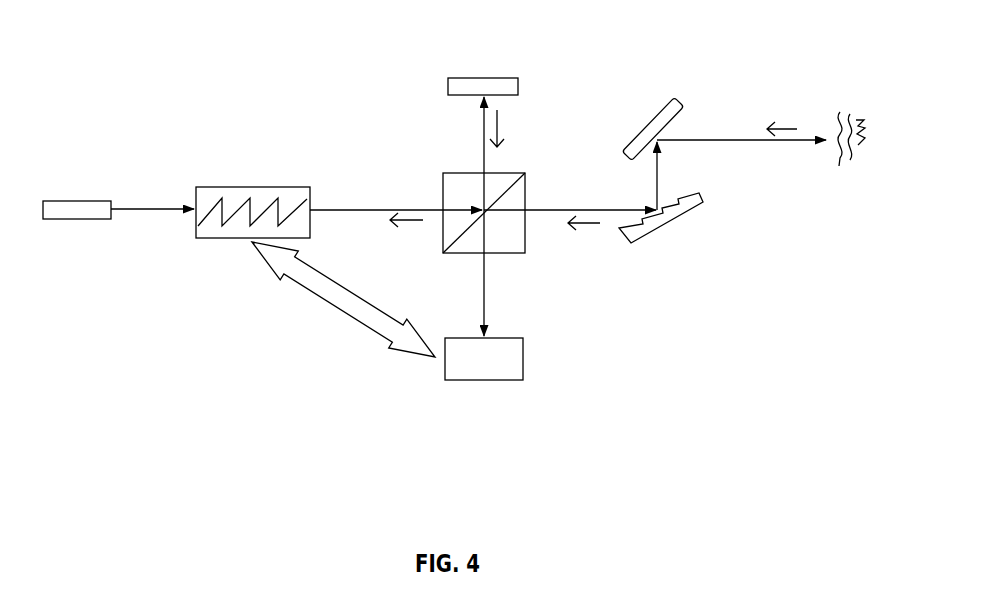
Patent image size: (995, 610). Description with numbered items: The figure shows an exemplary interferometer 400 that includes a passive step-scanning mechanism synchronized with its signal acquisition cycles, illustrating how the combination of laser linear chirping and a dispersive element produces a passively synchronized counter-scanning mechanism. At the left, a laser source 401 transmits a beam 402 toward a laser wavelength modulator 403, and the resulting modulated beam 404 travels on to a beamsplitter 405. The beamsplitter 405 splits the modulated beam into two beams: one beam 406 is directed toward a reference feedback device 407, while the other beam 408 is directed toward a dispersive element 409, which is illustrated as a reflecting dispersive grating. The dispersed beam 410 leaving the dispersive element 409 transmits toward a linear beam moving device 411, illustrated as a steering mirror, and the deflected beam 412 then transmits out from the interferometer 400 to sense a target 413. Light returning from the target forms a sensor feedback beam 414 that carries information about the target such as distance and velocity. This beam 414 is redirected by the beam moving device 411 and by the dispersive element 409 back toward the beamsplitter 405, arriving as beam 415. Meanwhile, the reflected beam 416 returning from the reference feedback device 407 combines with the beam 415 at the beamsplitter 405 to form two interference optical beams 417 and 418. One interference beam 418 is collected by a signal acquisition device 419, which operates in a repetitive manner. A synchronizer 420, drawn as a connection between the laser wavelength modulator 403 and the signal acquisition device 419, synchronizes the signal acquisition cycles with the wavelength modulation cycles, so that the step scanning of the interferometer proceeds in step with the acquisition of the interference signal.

The interferometer 400 is at (151, 373).
The laser source 401 is at (89, 197).
The beam 402 is at (154, 204).
The laser wavelength modulator 403 is at (251, 184).
The modulated beam 404 is at (347, 202).
The beamsplitter 405 is at (436, 177).
The beam 406 is at (472, 148).
The reference feedback device 407 is at (439, 85).
The beam 408 is at (553, 202).
The dispersive element 409 is at (678, 224).
The dispersed beam 410 is at (666, 171).
The linear beam moving device 411 is at (644, 111).
The deflected beam 412 is at (741, 151).
The target 413 is at (852, 106).
The sensor feedback beam 414 is at (782, 117).
The beam 415 is at (582, 238).
The reflected beam 416 is at (504, 131).
The interference optical beam 417 is at (384, 231).
The interference optical beam 418 is at (476, 290).
The signal acquisition device 419 is at (439, 370).
The synchronizer 420 is at (341, 318).